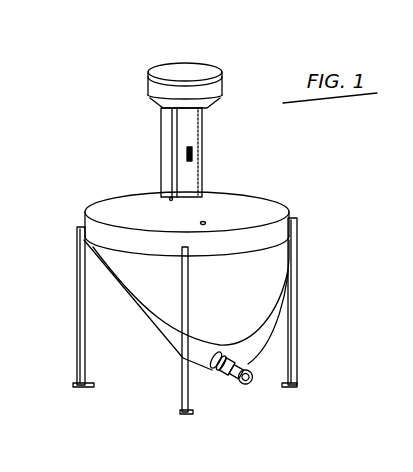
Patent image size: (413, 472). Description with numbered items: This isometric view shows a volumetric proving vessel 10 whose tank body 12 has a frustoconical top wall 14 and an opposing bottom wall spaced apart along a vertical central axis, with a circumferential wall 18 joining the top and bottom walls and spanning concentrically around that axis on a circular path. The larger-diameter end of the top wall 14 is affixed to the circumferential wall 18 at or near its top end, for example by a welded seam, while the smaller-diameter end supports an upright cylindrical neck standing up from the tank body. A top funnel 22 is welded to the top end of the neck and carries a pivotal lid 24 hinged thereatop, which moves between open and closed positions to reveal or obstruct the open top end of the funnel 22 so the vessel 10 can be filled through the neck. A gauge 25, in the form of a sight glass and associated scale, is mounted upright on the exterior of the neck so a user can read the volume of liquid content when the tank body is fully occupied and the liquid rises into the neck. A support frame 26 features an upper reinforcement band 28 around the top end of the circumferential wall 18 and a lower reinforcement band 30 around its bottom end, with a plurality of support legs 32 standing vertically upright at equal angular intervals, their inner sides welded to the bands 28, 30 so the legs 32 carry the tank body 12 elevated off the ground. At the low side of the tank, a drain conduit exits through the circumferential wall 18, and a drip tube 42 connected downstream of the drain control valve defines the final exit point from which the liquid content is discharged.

The volumetric proving vessel 10 is at (262, 150).
The tank body 12 is at (139, 340).
The top wall 14 is at (233, 203).
The circumferential wall 18 is at (133, 297).
The top funnel 22 is at (163, 90).
The pivotal lid 24 is at (182, 70).
The gauge 25 is at (157, 147).
The support frame 26 is at (177, 409).
The upper reinforcement band 28 is at (103, 200).
The lower reinforcement band 30 is at (168, 348).
The support legs 32 is at (77, 330).
The drip tube 42 is at (252, 382).